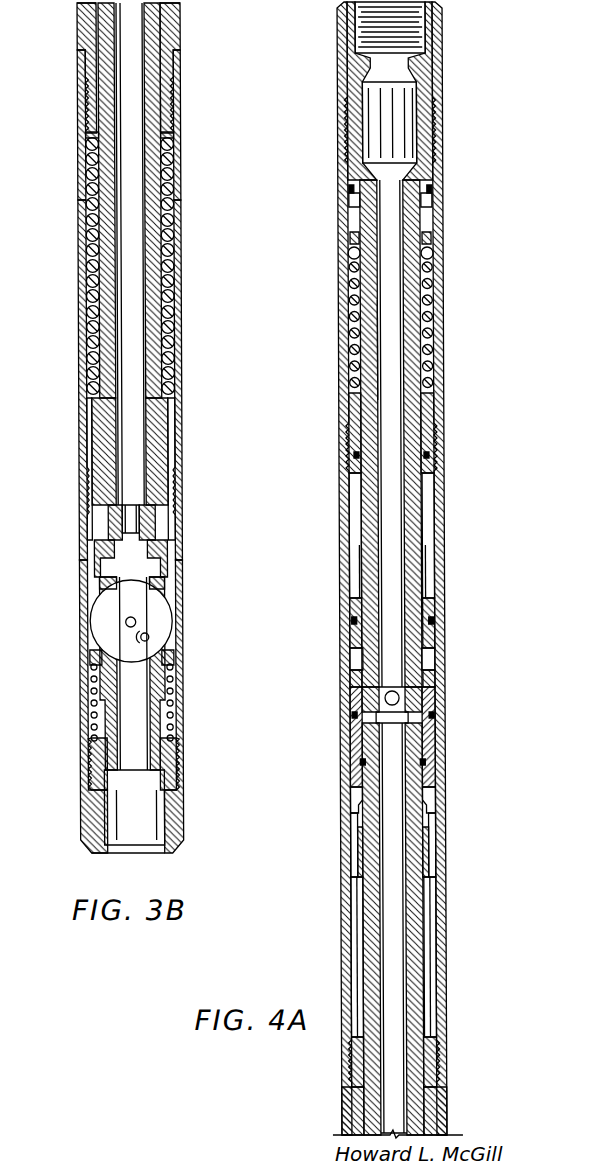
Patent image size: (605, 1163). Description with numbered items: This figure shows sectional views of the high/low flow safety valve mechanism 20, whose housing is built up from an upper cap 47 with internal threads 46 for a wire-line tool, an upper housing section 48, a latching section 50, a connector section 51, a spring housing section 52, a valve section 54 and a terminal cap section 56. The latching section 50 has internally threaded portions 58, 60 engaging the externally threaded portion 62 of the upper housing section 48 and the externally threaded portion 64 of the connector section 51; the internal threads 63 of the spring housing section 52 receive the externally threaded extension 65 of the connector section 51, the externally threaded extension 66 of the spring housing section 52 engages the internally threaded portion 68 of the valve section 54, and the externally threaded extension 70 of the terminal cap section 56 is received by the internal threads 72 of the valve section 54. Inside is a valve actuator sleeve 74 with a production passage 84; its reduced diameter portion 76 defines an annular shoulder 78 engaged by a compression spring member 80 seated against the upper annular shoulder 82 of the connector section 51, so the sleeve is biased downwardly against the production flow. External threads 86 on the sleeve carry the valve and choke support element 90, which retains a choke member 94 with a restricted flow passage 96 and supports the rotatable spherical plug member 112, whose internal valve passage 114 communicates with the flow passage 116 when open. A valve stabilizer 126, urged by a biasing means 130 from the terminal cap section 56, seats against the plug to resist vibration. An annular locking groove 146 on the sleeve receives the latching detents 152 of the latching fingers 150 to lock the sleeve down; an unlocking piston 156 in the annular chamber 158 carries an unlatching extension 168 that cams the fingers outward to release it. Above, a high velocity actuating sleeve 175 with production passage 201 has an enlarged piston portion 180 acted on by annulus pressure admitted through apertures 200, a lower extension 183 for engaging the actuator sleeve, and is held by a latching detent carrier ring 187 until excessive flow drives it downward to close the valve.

In FIG. 4A, the safety valve mechanism 20 is at (447, 109).
In FIG. 4A, the internal threads 46 is at (358, 33).
In FIG. 4A, the upper cap 47 is at (350, 73).
In FIG. 4A, the upper housing section 48 is at (432, 253).
In FIG. 4A, the latching section 50 is at (437, 727).
In FIG. 3B, the connector section 51 is at (169, 31).
In FIG. 4A, the connector section 51 is at (430, 1118).
In FIG. 3B, the spring housing section 52 is at (81, 299).
In FIG. 3B, the valve section 54 is at (86, 630).
In FIG. 3B, the terminal cap section 56 is at (86, 823).
In FIG. 4A, the internally threaded portion 58 is at (347, 438).
In FIG. 4A, the internally threaded portion 60 is at (348, 1063).
In FIG. 4A, the externally threaded portion 62 is at (421, 442).
In FIG. 3B, the internal threads 63 is at (167, 102).
In FIG. 4A, the externally threaded portion 64 is at (434, 1062).
In FIG. 3B, the externally threaded extension 65 is at (86, 101).
In FIG. 3B, the externally threaded extension 66 is at (170, 489).
In FIG. 3B, the internally threaded portion 68 is at (88, 498).
In FIG. 3B, the externally threaded extension 70 is at (97, 761).
In FIG. 3B, the internal threads 72 is at (165, 767).
In FIG. 3B, the valve actuator sleeve 74 is at (100, 416).
In FIG. 4A, the valve actuator sleeve 74 is at (412, 947).
In FIG. 3B, the reduced diameter portion 76 is at (171, 326).
In FIG. 3B, the annular shoulder 78 is at (169, 396).
In FIG. 3B, the compression spring member 80 is at (171, 284).
In FIG. 3B, the upper annular shoulder 82 is at (167, 150).
In FIG. 3B, the production passage 84 is at (141, 239).
In FIG. 4A, the production passage 84 is at (404, 998).
In FIG. 3B, the external threads 86 is at (98, 534).
In FIG. 3B, the valve and choke support element 90 is at (158, 575).
In FIG. 3B, the choke member 94 is at (151, 526).
In FIG. 3B, the restricted flow passage 96 is at (125, 505).
In FIG. 3B, the spherical plug member 112 is at (161, 619).
In FIG. 3B, the internal valve passage 114 is at (99, 655).
In FIG. 3B, the flow passage 116 is at (118, 575).
In FIG. 3B, the valve stabilizer 126 is at (102, 698).
In FIG. 3B, the biasing means 130 is at (171, 709).
In FIG. 4A, the annular locking groove 146 is at (371, 863).
In FIG. 4A, the latching fingers 150 is at (358, 958).
In FIG. 4A, the latching detents 152 is at (415, 867).
In FIG. 4A, the unlocking piston 156 is at (354, 745).
In FIG. 4A, the annular chamber 158 is at (425, 820).
In FIG. 4A, the unlatching extension 168 is at (358, 807).
In FIG. 4A, the high velocity actuating sleeve 175 is at (329, 291).
In FIG. 4A, the enlarged piston portion 180 is at (349, 638).
In FIG. 4A, the lower extension 183 is at (416, 660).
In FIG. 4A, the latching detent carrier ring 187 is at (352, 241).
In FIG. 4A, the apertures 200 is at (438, 515).
In FIG. 4A, the production passage 201 is at (377, 346).